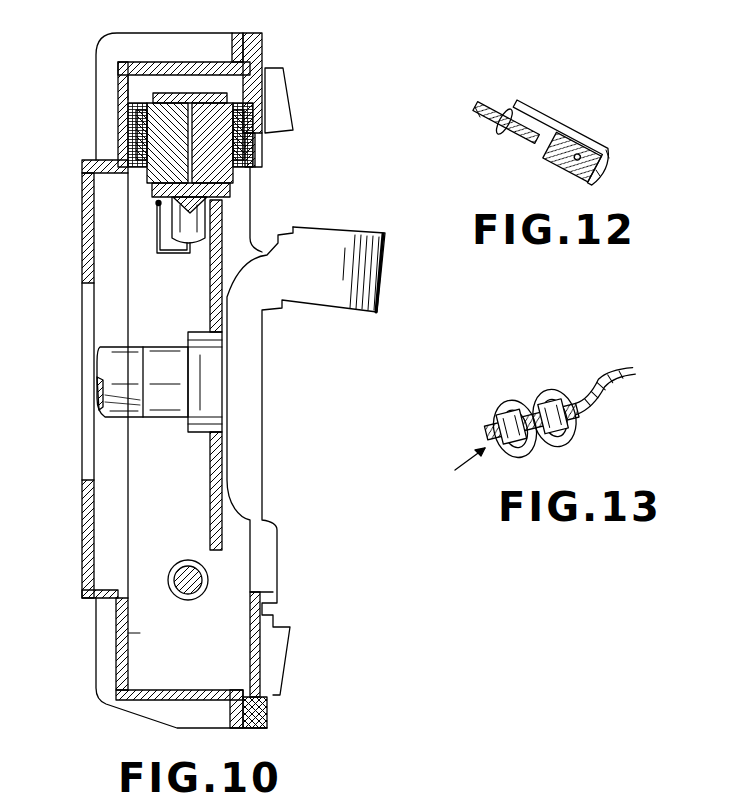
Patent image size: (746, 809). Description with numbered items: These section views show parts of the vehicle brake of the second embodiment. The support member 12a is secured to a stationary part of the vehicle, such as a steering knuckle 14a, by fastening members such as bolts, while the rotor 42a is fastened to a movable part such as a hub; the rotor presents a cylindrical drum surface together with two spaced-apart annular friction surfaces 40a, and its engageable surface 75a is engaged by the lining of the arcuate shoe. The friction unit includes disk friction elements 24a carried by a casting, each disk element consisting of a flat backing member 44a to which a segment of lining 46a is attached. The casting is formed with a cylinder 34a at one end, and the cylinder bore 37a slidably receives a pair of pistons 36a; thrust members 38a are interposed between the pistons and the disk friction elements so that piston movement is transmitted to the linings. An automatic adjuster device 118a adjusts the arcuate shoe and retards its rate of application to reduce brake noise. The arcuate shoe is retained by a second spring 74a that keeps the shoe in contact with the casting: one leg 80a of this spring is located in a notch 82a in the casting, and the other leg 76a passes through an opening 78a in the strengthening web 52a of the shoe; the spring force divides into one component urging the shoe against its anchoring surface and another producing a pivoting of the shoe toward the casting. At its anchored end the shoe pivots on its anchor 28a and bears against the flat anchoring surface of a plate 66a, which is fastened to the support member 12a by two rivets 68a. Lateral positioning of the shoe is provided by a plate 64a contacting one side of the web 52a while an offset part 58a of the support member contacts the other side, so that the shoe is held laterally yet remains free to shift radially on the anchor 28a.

In FIG. 10, the rotor 42a is at (178, 45).
In FIG. 10, the cylinder 34a is at (160, 71).
In FIG. 12, the cylinder 34a is at (572, 157).
In FIG. 10, the pistons 36a is at (204, 117).
In FIG. 10, the flat backing member 44a is at (127, 83).
In FIG. 10, the segment of lining 46a is at (139, 107).
In FIG. 10, the thrust members 38a is at (133, 147).
In FIG. 10, the disk friction element 24a is at (122, 178).
In FIG. 10, the cylinder bore 37a is at (156, 224).
In FIG. 10, the steering knuckle 14a is at (327, 298).
In FIG. 10, the support member 12a is at (212, 511).
In FIG. 13, the support member 12a is at (604, 390).
In FIG. 10, the automatic adjuster device 118a is at (190, 599).
In FIG. 10, the engageable surface of the rotor 75a is at (170, 690).
In FIG. 10, the annular friction surfaces 40a is at (138, 634).
In FIG. 12, the second spring 74a is at (556, 143).
In FIG. 12, the leg of the spring 76a is at (504, 121).
In FIG. 12, the opening 78a is at (498, 120).
In FIG. 12, the strengthening web 52a is at (506, 123).
In FIG. 12, the leg of the spring 80a is at (613, 165).
In FIG. 12, the notch 82a is at (602, 178).
In FIG. 13, the rivets 68a is at (534, 423).
In FIG. 13, the offset part of the support member 58a is at (531, 421).
In FIG. 13, the plate 66a is at (511, 426).
In FIG. 13, the plate 64a is at (553, 416).
In FIG. 13, the anchor 28a is at (473, 499).